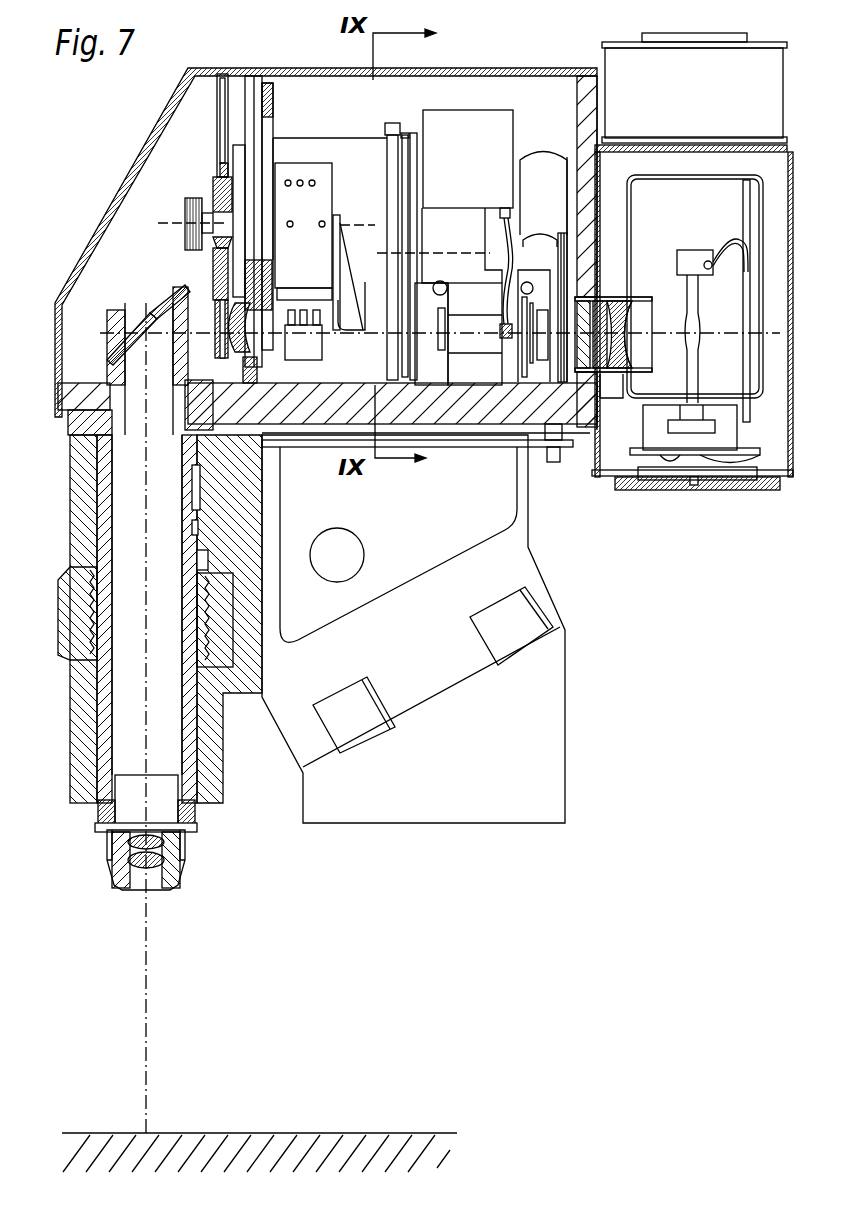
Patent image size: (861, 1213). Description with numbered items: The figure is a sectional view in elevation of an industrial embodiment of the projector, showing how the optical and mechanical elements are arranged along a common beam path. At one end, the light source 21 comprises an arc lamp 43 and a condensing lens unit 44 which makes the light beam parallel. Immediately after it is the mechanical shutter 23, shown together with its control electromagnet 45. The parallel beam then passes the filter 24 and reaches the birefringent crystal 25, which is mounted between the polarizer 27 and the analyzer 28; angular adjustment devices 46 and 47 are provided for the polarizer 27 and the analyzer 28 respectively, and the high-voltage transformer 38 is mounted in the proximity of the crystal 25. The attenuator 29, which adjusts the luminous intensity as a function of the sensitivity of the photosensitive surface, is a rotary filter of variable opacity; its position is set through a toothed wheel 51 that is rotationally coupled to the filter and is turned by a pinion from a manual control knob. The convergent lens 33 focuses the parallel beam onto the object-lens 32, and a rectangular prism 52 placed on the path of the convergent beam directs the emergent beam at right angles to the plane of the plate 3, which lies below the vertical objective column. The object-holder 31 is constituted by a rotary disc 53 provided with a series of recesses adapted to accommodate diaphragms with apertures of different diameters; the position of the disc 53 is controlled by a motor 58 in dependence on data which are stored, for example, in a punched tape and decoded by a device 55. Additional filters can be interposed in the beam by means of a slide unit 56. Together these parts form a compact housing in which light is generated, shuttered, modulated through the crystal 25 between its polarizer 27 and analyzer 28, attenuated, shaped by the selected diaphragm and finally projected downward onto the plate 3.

The plate 3 is at (268, 1133).
The light source 21 is at (692, 298).
The mechanical shutter 23 is at (560, 258).
The filter 24 is at (543, 357).
The birefringent crystal 25 is at (467, 347).
The polarizer 27 is at (525, 357).
The analyzer 28 is at (440, 347).
The attenuator 29 is at (403, 135).
The object-holder 31 is at (213, 147).
The object-lens 32 is at (150, 874).
The convergent lens 33 is at (240, 340).
The high-voltage transformer 38 is at (460, 122).
The arc lamp 43 is at (692, 303).
The condensing lens unit 44 is at (640, 297).
The control electromagnet 45 is at (537, 163).
The angular adjustment device 46 is at (527, 282).
The angular adjustment device 47 is at (440, 281).
The toothed wheel 51 is at (392, 140).
The rectangular prism 52 is at (167, 318).
The rotary disc 53 is at (223, 77).
The decoding device 55 is at (322, 188).
The slide unit 56 is at (302, 345).
The motor 58 is at (303, 103).